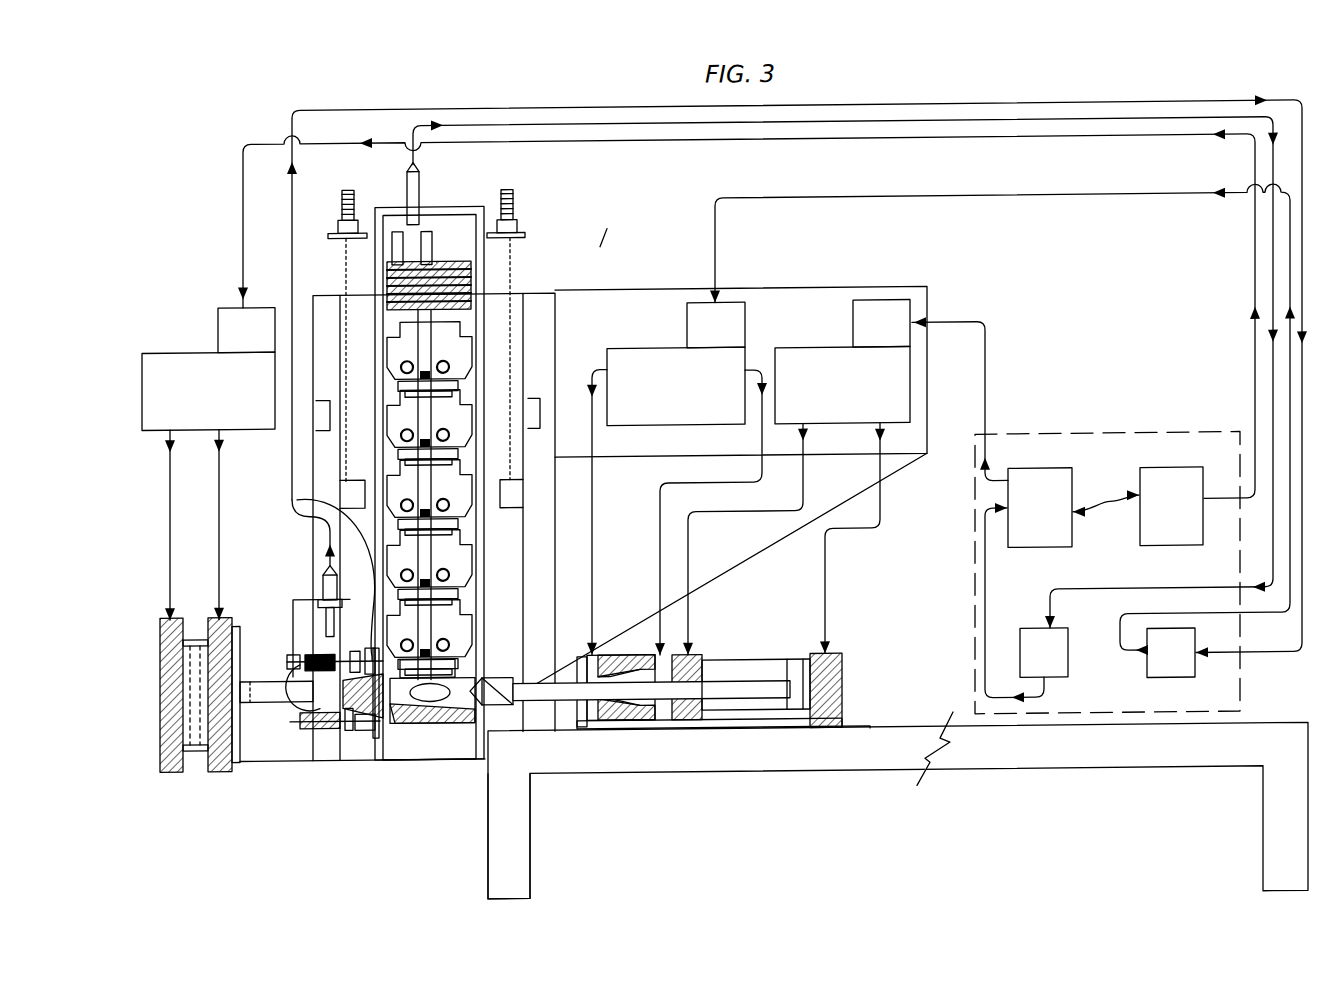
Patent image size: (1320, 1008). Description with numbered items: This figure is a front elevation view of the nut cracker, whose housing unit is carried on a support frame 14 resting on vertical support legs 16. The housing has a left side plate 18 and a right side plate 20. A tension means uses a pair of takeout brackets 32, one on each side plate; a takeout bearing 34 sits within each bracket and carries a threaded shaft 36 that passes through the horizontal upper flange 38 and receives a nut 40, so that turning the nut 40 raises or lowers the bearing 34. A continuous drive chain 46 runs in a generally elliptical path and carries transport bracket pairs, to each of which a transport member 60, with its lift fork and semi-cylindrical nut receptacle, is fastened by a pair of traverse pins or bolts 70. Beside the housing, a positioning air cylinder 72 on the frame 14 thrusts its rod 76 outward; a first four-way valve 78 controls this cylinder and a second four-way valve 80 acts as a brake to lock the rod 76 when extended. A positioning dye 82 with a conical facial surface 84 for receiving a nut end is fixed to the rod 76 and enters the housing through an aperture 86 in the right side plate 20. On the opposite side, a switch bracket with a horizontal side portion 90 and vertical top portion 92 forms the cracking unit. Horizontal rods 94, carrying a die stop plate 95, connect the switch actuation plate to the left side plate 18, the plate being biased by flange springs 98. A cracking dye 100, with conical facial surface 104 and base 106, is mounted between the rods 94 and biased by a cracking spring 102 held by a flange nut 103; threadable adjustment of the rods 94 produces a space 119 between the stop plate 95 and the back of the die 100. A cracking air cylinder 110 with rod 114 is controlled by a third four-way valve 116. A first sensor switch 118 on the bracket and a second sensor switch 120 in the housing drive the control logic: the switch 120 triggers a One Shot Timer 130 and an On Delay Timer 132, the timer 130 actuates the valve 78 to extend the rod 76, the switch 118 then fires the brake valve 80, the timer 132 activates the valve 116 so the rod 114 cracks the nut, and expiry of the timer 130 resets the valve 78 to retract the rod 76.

The support frame 14 is at (831, 748).
The vertical support legs 16 is at (531, 798).
The left side plate 18 is at (378, 474).
The right side plate 20 is at (484, 503).
The takeout brackets 32 is at (513, 360).
The takeout bearing 34 is at (520, 408).
The threaded shaft 36 is at (558, 300).
The upper flange 38 is at (527, 244).
The nut 40 is at (515, 236).
The continuous drive chain 46 is at (489, 683).
The transport member 60 is at (395, 356).
The traverse pins or bolts 70 is at (456, 682).
The positioning air cylinder 72 is at (742, 719).
The rod 76 is at (582, 706).
The first four-way valve 78 is at (830, 360).
The second four-way valve 80 is at (725, 366).
The positioning dye 82 is at (547, 705).
The conical facial surface 84 is at (502, 703).
The aperture 86 is at (486, 685).
The side portion 90 is at (290, 614).
The top portion 92 is at (322, 603).
The horizontal rods 94 is at (301, 708).
The die stop plate 95 is at (366, 736).
The flange springs 98 is at (311, 736).
The cracking dye 100 is at (378, 746).
The cracking spring 102 is at (346, 736).
The flange nut 103 is at (287, 664).
The conical facial surface 104 is at (441, 729).
The base 106 is at (332, 659).
The cracking air cylinder 110 is at (211, 778).
The rod 114 is at (263, 777).
The third four-way valve 116 is at (207, 358).
The first sensor switch 118 is at (325, 581).
The space 119 is at (303, 517).
The second sensor switch 120 is at (420, 199).
The One Shot Timer 130 is at (1047, 487).
The On Delay Timer 132 is at (1150, 488).